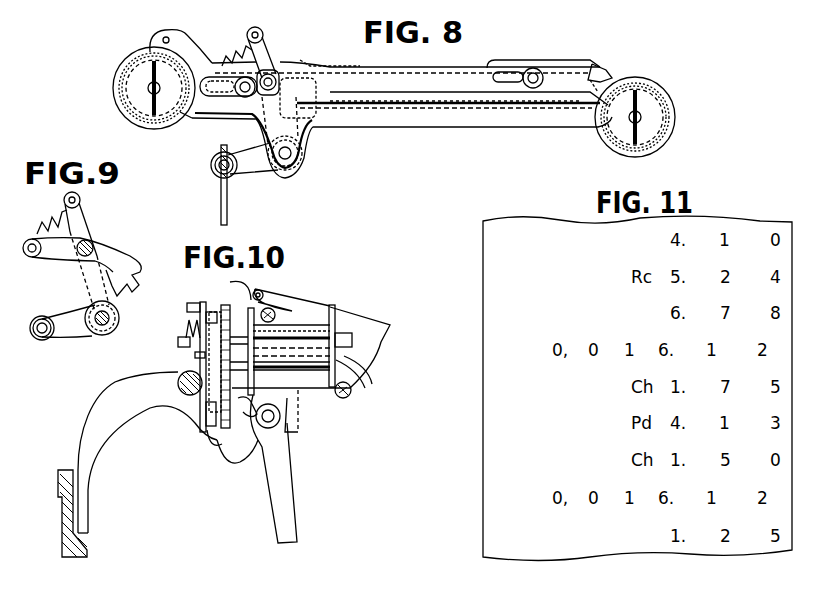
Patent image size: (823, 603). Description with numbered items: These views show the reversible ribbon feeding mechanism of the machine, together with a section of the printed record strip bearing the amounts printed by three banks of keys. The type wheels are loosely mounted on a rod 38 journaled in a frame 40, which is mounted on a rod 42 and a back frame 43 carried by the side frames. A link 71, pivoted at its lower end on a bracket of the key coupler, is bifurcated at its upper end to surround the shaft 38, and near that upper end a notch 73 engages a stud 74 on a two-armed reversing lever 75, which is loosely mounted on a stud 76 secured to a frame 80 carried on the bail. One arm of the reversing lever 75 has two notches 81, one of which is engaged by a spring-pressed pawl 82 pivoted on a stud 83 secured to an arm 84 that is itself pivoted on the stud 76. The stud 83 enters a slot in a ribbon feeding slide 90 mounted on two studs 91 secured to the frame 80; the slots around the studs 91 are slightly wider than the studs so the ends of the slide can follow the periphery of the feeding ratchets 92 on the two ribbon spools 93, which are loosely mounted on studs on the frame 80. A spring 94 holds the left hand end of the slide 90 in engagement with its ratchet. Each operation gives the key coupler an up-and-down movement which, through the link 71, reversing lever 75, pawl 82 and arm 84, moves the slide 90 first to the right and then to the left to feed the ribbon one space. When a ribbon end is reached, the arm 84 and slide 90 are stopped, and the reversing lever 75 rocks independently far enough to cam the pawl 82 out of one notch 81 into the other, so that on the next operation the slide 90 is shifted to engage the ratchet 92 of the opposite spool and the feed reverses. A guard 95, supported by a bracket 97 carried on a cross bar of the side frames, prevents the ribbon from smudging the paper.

In FIG. 10, the rod 38 is at (288, 430).
In FIG. 10, the frame 40 is at (108, 426).
In FIG. 10, the rod 42 is at (178, 385).
In FIG. 10, the back frame 43 is at (60, 512).
In FIG. 8, the link 71 is at (228, 208).
In FIG. 10, the link 71 is at (288, 480).
In FIG. 10, the notch 73 is at (252, 419).
In FIG. 8, the stud 74 is at (237, 164).
In FIG. 9, the stud 74 is at (45, 338).
In FIG. 10, the stud 74 is at (238, 445).
In FIG. 8, the two-armed reversing lever 75 is at (236, 156).
In FIG. 9, the two-armed reversing lever 75 is at (124, 301).
In FIG. 10, the two-armed reversing lever 75 is at (214, 445).
In FIG. 8, the stud 76 is at (298, 163).
In FIG. 9, the stud 76 is at (94, 321).
In FIG. 8, the frame 80 is at (375, 125).
In FIG. 9, the notches 81 is at (137, 277).
In FIG. 9, the spring-pressed pawl 82 is at (108, 246).
In FIG. 8, the stud 83 is at (273, 72).
In FIG. 9, the stud 83 is at (92, 249).
In FIG. 8, the arm 84 is at (265, 41).
In FIG. 9, the arm 84 is at (88, 284).
In FIG. 10, the arm 84 is at (203, 304).
In FIG. 8, the ribbon feeding slide 90 is at (322, 72).
In FIG. 10, the ribbon feeding slide 90 is at (230, 300).
In FIG. 8, the studs 91 is at (241, 96).
In FIG. 8, the feeding ratchets 92 is at (126, 60).
In FIG. 10, the feeding ratchets 92 is at (231, 316).
In FIG. 8, the ribbon spools 93 is at (116, 97).
In FIG. 10, the ribbon spools 93 is at (308, 326).
In FIG. 8, the spring 94 is at (596, 88).
In FIG. 8, the guard 95 is at (462, 100).
In FIG. 10, the guard 95 is at (248, 289).
In FIG. 10, the bracket 97 is at (371, 326).